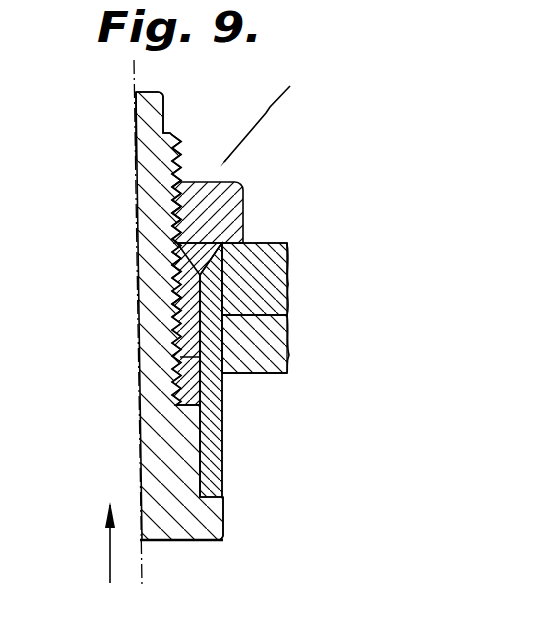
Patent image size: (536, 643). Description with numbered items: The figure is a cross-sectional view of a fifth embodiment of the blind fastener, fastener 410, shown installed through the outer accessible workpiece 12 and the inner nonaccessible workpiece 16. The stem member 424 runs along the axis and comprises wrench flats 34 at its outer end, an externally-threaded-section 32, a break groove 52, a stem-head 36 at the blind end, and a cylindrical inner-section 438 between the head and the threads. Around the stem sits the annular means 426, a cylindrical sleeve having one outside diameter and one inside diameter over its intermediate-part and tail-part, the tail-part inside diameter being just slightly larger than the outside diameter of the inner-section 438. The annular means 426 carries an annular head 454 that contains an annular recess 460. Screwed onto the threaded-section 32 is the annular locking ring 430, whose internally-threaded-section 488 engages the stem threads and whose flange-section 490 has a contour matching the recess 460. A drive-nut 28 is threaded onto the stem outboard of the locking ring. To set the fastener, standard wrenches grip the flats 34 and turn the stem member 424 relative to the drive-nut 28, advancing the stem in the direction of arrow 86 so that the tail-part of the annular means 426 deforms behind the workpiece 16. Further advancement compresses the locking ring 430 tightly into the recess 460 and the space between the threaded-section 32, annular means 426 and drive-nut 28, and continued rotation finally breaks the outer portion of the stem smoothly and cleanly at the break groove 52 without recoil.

The accessible workpiece 12 is at (270, 243).
The nonaccessible workpiece 16 is at (273, 343).
The drive nut 28 is at (227, 193).
The externally-threaded-section 32 is at (182, 152).
The wrench flats 34 is at (164, 101).
The stem-head 36 is at (190, 522).
The break groove 52 is at (173, 305).
The arrow 86 is at (107, 562).
The fastener 410 is at (272, 113).
The stem member 424 is at (154, 152).
The annular means 426 is at (215, 465).
The annular locking ring 430 is at (247, 373).
The cylindrical inner-section 438 is at (167, 472).
The annular head 454 is at (226, 258).
The annular recess 460 is at (175, 215).
The internally-threaded-section 488 is at (197, 328).
The flange-section 490 is at (180, 265).